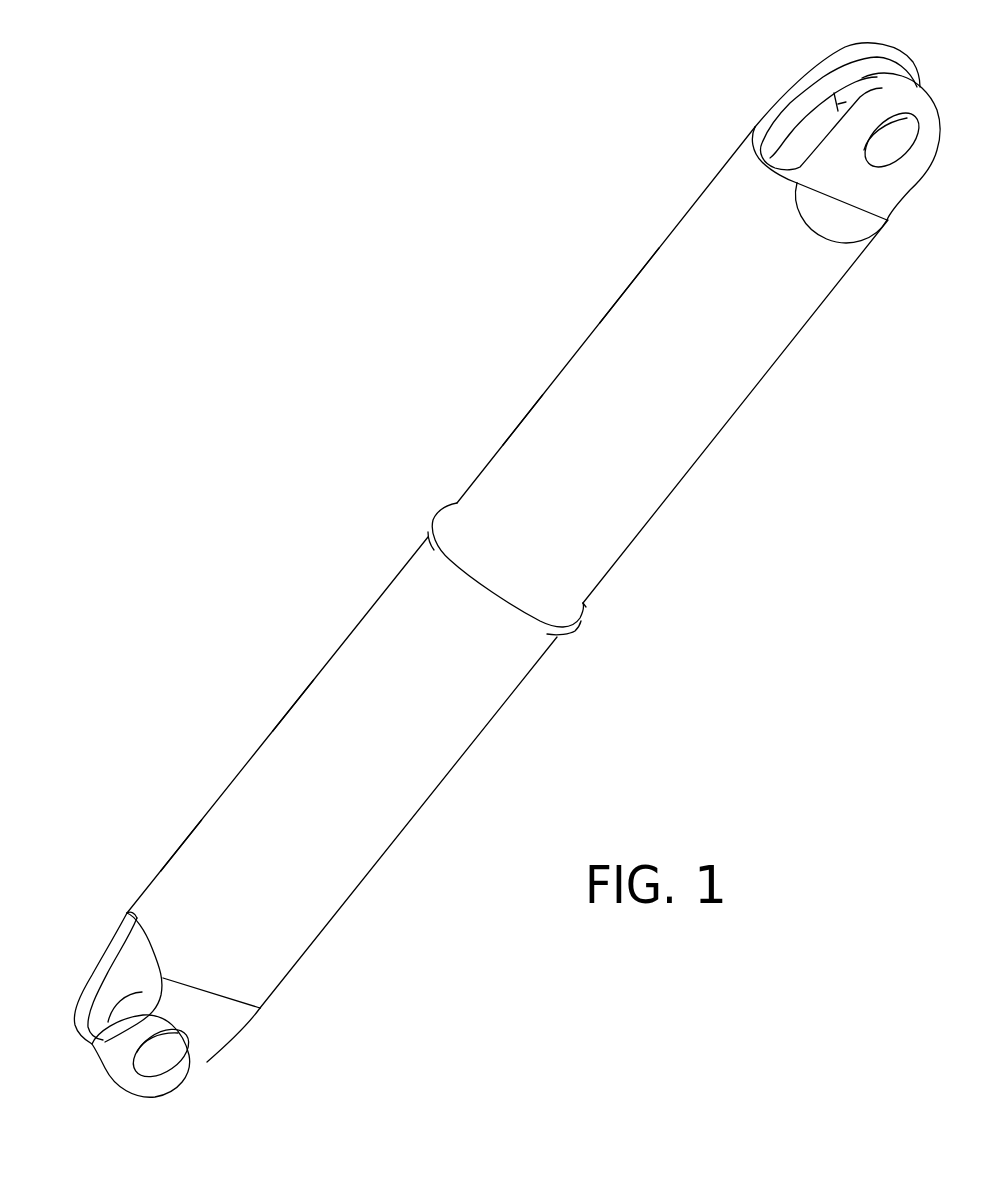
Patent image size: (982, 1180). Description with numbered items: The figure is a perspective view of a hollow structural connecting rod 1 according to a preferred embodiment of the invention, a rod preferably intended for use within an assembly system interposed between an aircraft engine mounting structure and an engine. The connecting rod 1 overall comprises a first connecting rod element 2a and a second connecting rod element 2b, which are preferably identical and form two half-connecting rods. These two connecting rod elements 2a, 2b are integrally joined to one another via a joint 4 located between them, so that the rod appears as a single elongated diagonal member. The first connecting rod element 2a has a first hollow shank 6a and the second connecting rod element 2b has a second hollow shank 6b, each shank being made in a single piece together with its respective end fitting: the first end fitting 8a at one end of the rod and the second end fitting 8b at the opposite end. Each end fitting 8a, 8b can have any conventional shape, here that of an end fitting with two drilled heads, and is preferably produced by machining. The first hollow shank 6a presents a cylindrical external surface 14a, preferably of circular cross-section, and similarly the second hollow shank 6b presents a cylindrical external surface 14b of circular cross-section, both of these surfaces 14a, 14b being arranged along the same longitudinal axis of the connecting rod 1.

The hollow structural connecting rod 1 is at (488, 563).
The first connecting rod element 2a is at (383, 875).
The second connecting rod element 2b is at (727, 445).
The joint 4 is at (432, 521).
The first hollow shank 6a is at (197, 872).
The second hollow shank 6b is at (625, 330).
The first end fitting 8a is at (93, 987).
The second end fitting 8b is at (803, 97).
The cylindrical external surface 14a is at (308, 722).
The cylindrical external surface 14b is at (532, 433).